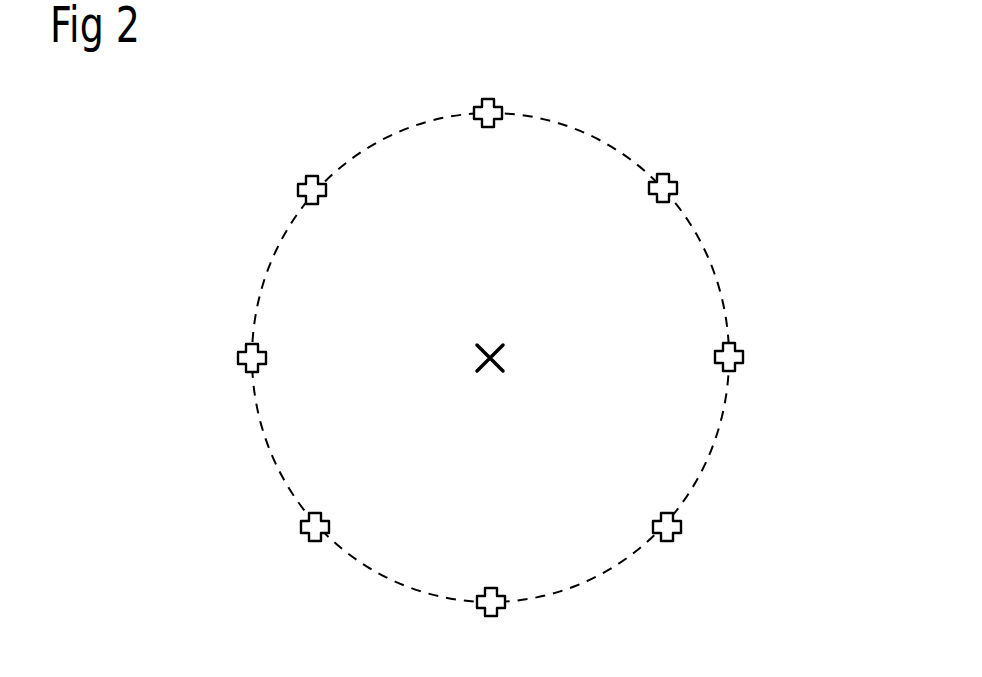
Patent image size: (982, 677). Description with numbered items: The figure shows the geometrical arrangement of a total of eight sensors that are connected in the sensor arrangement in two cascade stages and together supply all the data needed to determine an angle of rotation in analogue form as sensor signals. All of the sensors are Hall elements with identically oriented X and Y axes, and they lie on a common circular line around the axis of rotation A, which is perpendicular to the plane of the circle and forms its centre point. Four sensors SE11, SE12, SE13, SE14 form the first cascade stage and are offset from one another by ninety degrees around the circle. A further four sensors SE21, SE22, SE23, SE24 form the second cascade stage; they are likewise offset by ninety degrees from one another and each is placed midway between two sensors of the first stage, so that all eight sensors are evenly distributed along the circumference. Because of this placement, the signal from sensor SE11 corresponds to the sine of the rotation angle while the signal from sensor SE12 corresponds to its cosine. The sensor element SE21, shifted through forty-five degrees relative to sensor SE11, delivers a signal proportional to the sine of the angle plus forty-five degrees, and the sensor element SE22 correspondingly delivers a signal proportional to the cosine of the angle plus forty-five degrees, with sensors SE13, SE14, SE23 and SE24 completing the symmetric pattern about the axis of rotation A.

The axis of rotation A is at (504, 357).
The sensor SE11 is at (485, 100).
The sensor SE12 is at (745, 357).
The sensor SE13 is at (492, 616).
The sensor SE14 is at (238, 360).
The sensor element SE21 is at (678, 190).
The sensor element SE22 is at (678, 537).
The sensor SE23 is at (305, 539).
The sensor SE24 is at (300, 195).